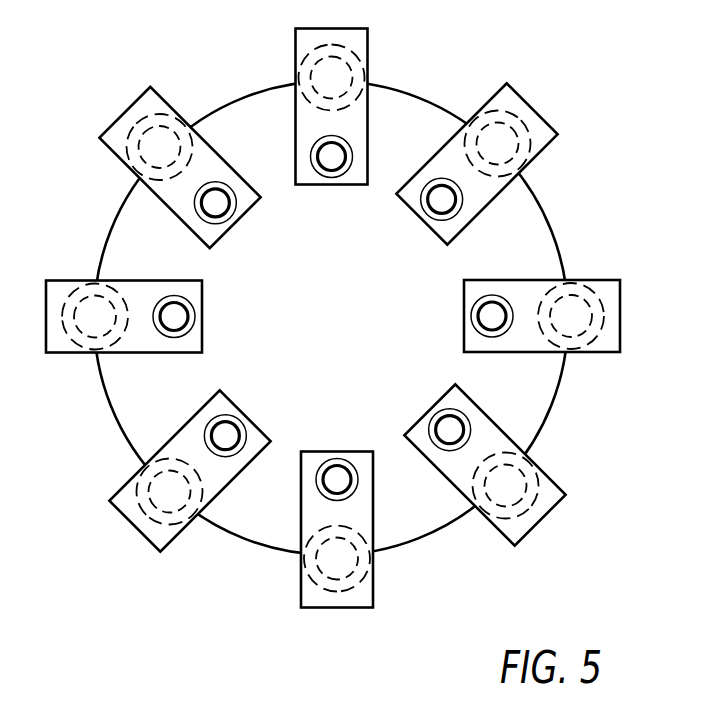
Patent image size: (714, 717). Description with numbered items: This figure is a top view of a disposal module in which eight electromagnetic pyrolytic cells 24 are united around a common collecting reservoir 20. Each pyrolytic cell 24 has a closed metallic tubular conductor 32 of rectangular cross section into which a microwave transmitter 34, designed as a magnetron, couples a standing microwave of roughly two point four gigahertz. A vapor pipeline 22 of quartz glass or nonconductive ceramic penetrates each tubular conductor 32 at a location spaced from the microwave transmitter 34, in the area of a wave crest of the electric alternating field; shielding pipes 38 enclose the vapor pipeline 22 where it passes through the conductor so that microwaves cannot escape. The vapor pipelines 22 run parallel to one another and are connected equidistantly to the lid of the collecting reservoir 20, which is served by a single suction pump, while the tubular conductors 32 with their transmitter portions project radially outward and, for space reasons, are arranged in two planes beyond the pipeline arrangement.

The collecting reservoir 20 is at (105, 228).
The vapor pipeline 22 is at (220, 204).
The electromagnetic pyrolytic cell 24 is at (600, 363).
The tubular conductor 32 is at (447, 132).
The microwave transmitter 34 is at (333, 557).
The shielding pipe 38 is at (468, 316).